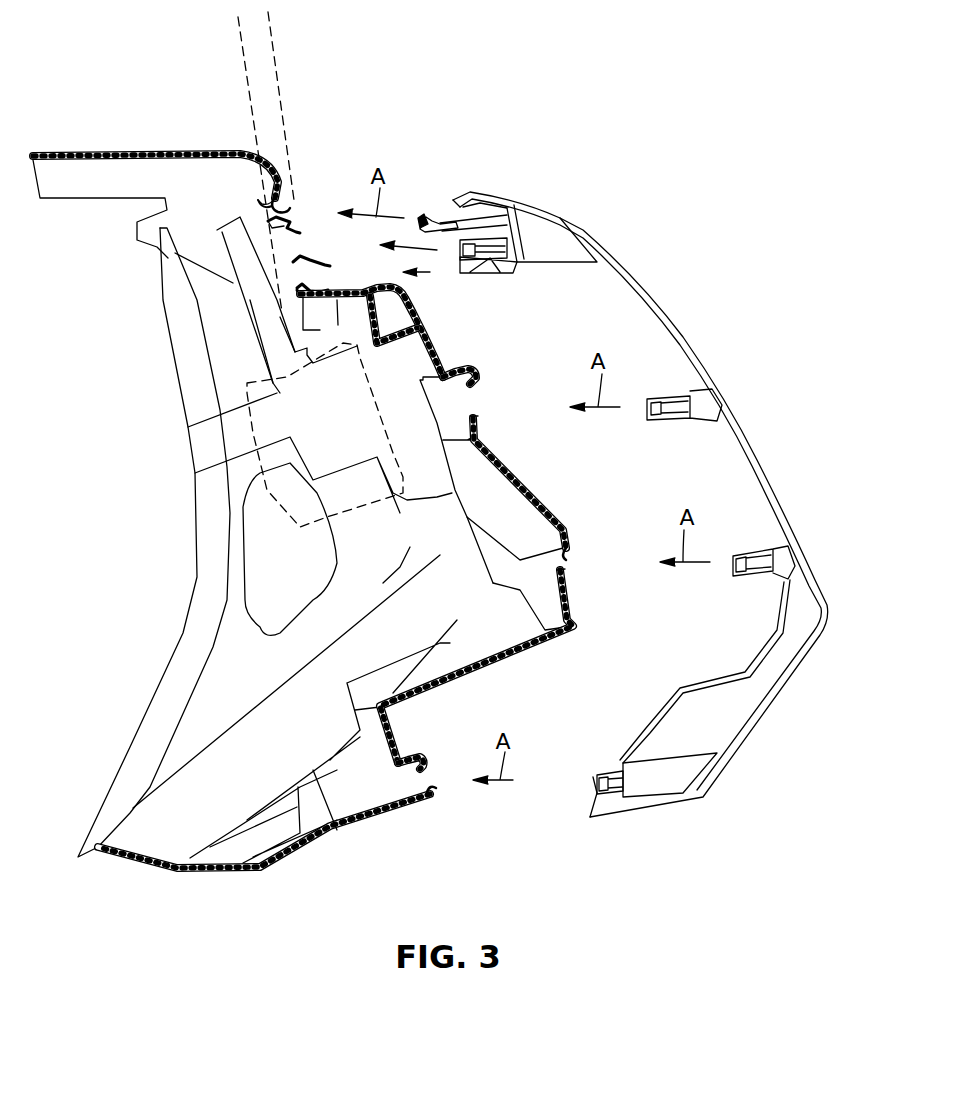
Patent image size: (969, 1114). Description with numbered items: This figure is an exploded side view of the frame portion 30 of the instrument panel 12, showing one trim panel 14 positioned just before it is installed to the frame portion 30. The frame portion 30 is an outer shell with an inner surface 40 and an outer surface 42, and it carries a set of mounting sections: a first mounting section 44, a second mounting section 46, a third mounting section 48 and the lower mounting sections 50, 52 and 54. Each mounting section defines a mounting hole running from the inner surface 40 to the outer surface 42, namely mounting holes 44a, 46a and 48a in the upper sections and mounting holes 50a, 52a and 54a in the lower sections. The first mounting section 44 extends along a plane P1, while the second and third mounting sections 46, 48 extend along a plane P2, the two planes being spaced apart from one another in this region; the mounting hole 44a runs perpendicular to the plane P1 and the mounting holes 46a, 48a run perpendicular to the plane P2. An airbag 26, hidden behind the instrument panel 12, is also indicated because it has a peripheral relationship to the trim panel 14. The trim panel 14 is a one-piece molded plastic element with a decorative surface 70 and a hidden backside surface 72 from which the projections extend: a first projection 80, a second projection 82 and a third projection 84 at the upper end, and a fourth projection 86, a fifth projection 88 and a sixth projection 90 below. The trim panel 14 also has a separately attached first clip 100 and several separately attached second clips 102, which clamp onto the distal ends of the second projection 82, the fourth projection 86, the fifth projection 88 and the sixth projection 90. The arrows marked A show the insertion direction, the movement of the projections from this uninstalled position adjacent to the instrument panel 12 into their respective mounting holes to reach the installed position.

The instrument panel 12 is at (107, 108).
The plane P1 is at (243, 66).
The plane P2 is at (273, 50).
The trim panel 14 is at (673, 313).
The airbag 26 is at (327, 527).
The frame portion 30 is at (532, 480).
The inner surface 40 is at (337, 303).
The outer surface 42 is at (341, 290).
The first mounting section 44 is at (287, 203).
The mounting hole 44a is at (265, 203).
The second mounting section 46 is at (300, 233).
The mounting hole 46a is at (293, 260).
The third mounting section 48 is at (297, 258).
The mounting hole 48a is at (282, 282).
The lower mounting section 50 is at (475, 388).
The mounting hole 50a is at (480, 417).
The lower mounting section 52 is at (566, 551).
The mounting hole 52a is at (568, 568).
The lower mounting section 54 is at (427, 771).
The mounting hole 54a is at (436, 787).
The decorative surface 70 is at (755, 448).
The backside surface 72 is at (741, 473).
The first projection 80 is at (443, 216).
The second projection 82 is at (509, 240).
The third projection 84 is at (497, 280).
The fourth projection 86 is at (684, 403).
The fifth projection 88 is at (771, 554).
The sixth projection 90 is at (660, 773).
The first clip 100 is at (418, 216).
The second clip 102 is at (460, 247).